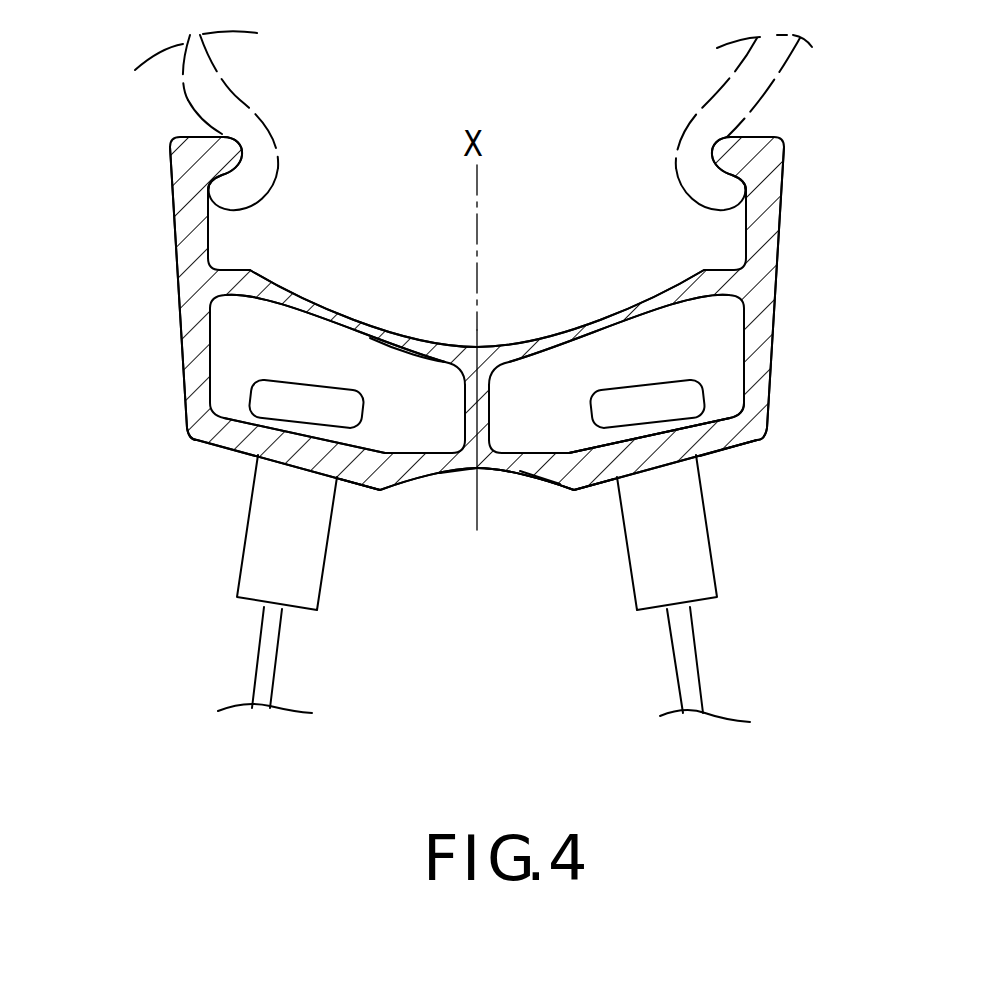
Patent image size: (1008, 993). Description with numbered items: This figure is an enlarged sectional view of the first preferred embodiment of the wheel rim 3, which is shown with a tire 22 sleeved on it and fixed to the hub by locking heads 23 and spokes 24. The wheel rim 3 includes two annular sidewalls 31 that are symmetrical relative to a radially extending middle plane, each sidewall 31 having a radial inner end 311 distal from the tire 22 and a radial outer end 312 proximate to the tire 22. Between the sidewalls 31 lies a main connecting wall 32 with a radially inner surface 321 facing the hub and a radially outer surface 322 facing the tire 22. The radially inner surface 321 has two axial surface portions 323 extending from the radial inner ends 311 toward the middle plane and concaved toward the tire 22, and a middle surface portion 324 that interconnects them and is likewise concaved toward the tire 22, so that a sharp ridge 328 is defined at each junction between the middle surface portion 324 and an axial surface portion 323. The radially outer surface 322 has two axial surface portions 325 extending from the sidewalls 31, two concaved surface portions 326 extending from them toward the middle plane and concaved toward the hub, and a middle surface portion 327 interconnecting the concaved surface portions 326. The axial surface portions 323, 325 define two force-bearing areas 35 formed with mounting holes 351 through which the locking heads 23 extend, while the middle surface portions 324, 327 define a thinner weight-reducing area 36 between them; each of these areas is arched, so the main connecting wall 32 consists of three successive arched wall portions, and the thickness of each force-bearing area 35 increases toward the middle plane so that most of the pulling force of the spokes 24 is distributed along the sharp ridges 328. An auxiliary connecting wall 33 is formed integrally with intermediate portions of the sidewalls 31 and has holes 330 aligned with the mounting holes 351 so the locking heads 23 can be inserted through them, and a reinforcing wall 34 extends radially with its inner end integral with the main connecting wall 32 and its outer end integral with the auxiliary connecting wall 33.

The wheel rim 3 is at (792, 240).
The tire 22 is at (693, 110).
The locking head 23 is at (313, 613).
The spoke 24 is at (257, 648).
The annular sidewall 31 is at (177, 253).
The main connecting wall 32 is at (222, 462).
The auxiliary connecting wall 33 is at (420, 340).
The reinforcing wall 34 is at (487, 397).
The force-bearing area 35 is at (297, 450).
The weight-reducing area 36 is at (458, 468).
The radial inner end 311 is at (200, 420).
The radial outer end 312 is at (184, 152).
The radially inner surface 321 is at (510, 473).
The radially outer surface 322 is at (720, 417).
The axial surface portion 323 is at (207, 447).
The middle surface portion 324 is at (548, 485).
The axial surface portion 325 is at (233, 405).
The concaved surface portion 326 is at (375, 452).
The middle surface portion 327 is at (430, 450).
The sharp ridge 328 is at (367, 487).
The hole 330 is at (640, 325).
The mounting hole 351 is at (713, 455).